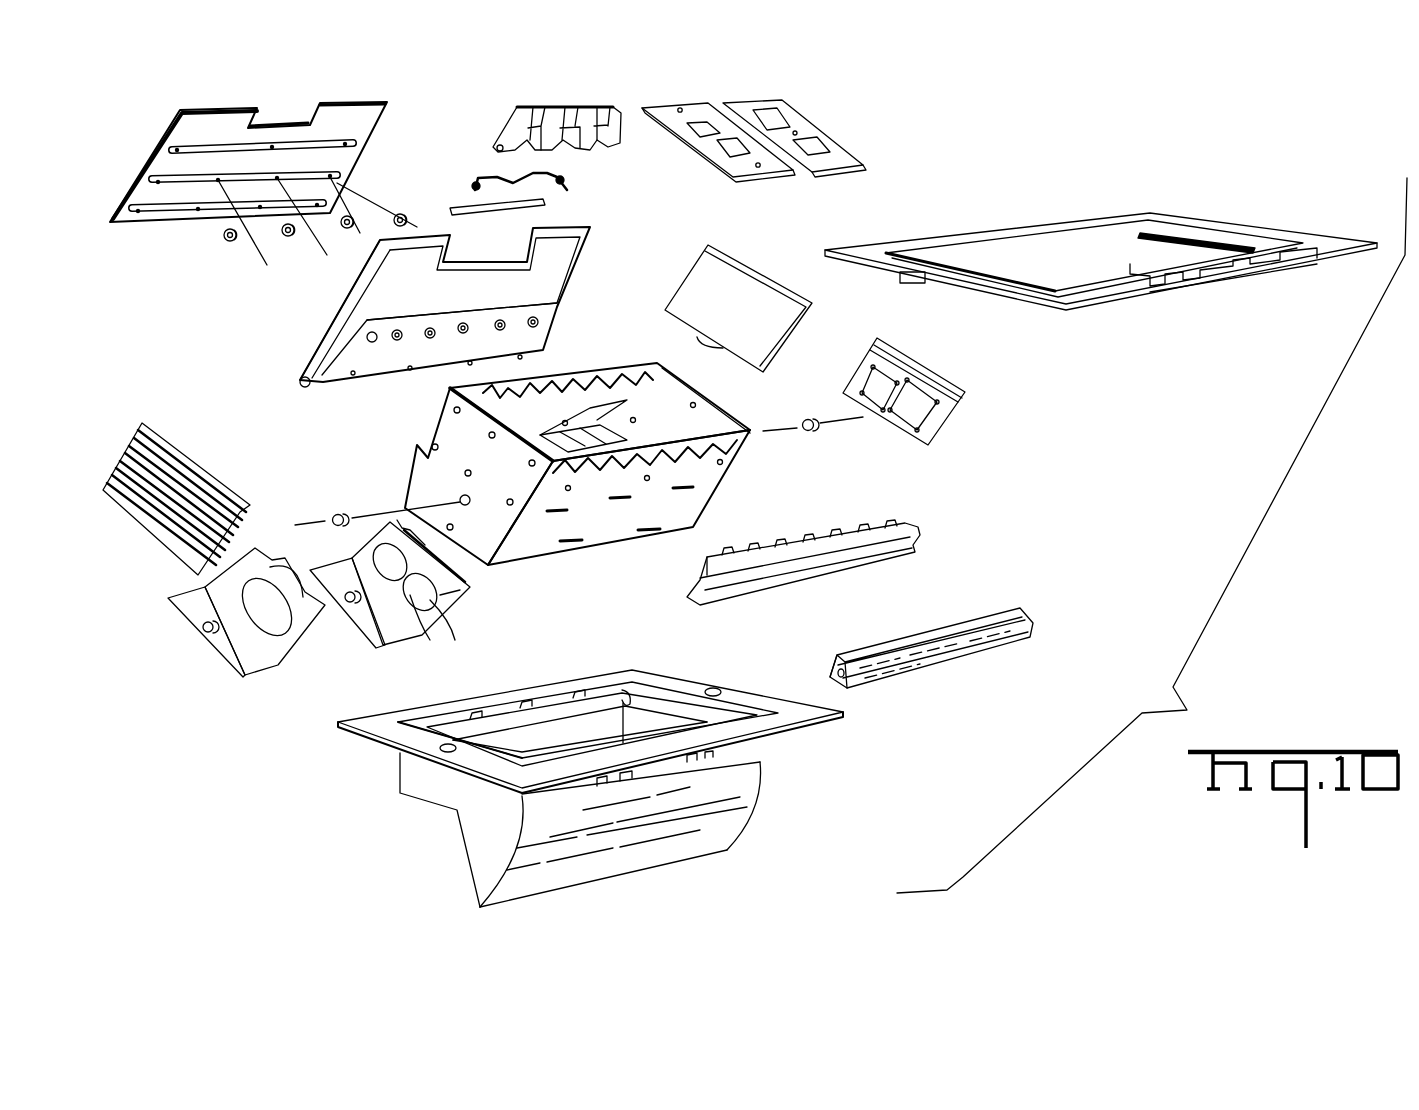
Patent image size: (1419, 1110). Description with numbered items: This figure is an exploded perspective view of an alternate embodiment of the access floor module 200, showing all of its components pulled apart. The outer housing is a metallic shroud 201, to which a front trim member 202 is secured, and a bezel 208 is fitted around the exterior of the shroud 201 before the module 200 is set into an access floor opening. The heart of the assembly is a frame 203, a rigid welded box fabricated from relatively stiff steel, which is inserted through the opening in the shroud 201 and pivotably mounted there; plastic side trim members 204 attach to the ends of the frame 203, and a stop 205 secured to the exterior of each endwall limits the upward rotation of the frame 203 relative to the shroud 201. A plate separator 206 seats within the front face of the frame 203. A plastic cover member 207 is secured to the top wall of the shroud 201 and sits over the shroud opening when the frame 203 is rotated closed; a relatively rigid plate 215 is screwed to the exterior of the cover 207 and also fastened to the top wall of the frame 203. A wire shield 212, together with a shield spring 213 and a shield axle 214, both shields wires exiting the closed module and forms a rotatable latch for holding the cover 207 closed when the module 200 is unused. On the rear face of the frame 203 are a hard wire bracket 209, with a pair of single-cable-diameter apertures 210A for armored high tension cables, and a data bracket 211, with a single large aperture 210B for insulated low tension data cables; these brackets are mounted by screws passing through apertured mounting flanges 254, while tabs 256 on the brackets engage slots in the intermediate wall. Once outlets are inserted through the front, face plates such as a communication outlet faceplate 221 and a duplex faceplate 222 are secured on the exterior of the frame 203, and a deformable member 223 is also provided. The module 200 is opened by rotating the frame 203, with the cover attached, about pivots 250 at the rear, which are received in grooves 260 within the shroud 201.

The access floor module 200 is at (1208, 712).
The shroud 201 is at (477, 830).
The front trim member 202 is at (913, 523).
The frame 203 is at (677, 507).
The side trim member 204 is at (167, 515).
The stop 205 is at (337, 513).
The plate separator 206 is at (700, 293).
The cover member 207 is at (320, 348).
The bezel 208 is at (1077, 227).
The hard wire bracket 209 is at (450, 603).
The single-cable-diameter aperture 210A is at (414, 602).
The large aperture 210B is at (239, 707).
The data bracket 211 is at (243, 648).
The wire shield 212 is at (512, 118).
The shield spring 213 is at (498, 176).
The shield axle 214 is at (460, 205).
The plate 215 is at (143, 166).
The communication outlet faceplate 221 is at (675, 107).
The duplex faceplate 222 is at (843, 150).
The deformable member 223 is at (970, 640).
The pivot 250 is at (545, 355).
The apertured mounting flange 254 is at (200, 627).
The tab 256 is at (318, 607).
The groove 260 is at (605, 688).